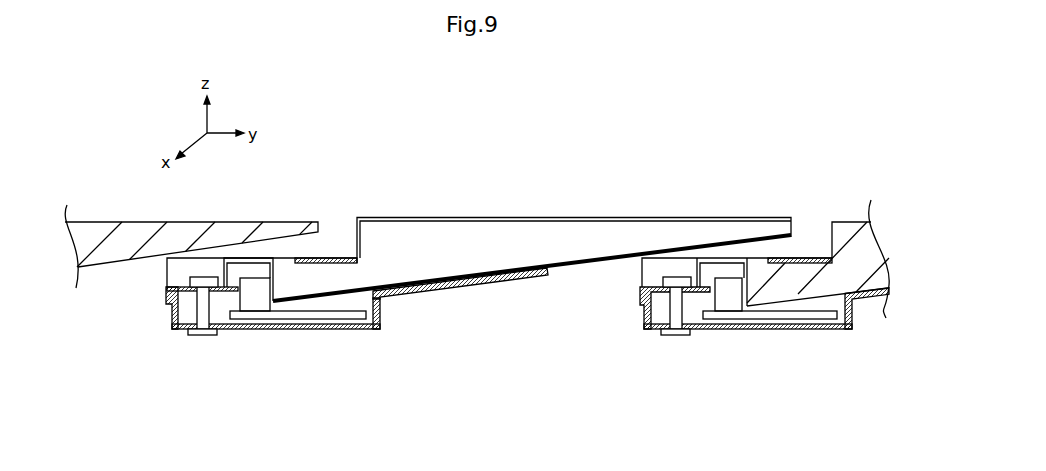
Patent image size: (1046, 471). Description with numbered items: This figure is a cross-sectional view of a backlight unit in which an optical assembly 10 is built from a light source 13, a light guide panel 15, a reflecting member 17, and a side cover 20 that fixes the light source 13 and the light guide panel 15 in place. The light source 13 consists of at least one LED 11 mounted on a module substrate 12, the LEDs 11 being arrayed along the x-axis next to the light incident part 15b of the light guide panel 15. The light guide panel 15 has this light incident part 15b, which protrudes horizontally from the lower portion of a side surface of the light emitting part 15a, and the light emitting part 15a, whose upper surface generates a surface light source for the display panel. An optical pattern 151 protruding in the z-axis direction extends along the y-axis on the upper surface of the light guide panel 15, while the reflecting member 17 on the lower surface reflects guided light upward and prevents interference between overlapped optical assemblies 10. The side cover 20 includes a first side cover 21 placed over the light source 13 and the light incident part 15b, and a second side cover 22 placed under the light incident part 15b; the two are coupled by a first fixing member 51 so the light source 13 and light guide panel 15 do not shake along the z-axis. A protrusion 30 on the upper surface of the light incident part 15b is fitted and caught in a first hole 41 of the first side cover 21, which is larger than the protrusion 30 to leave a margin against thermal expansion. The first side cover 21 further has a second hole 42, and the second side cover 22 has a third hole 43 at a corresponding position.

The optical assembly 10 is at (574, 193).
The LED 11 is at (253, 302).
The module substrate 12 is at (310, 315).
The light source 13 is at (298, 343).
The light guide panel 15 is at (431, 342).
The light emitting part 15a is at (428, 262).
The light incident part 15b is at (315, 282).
The reflecting member 17 is at (560, 268).
The side cover 20 is at (237, 277).
The first side cover 21 is at (165, 292).
The second side cover 22 is at (170, 318).
The protrusion 30 is at (293, 262).
The first hole 41 is at (250, 259).
The second hole 42 is at (176, 288).
The third hole 43 is at (217, 336).
The first fixing member 51 is at (200, 308).
The optical pattern 151 is at (740, 221).